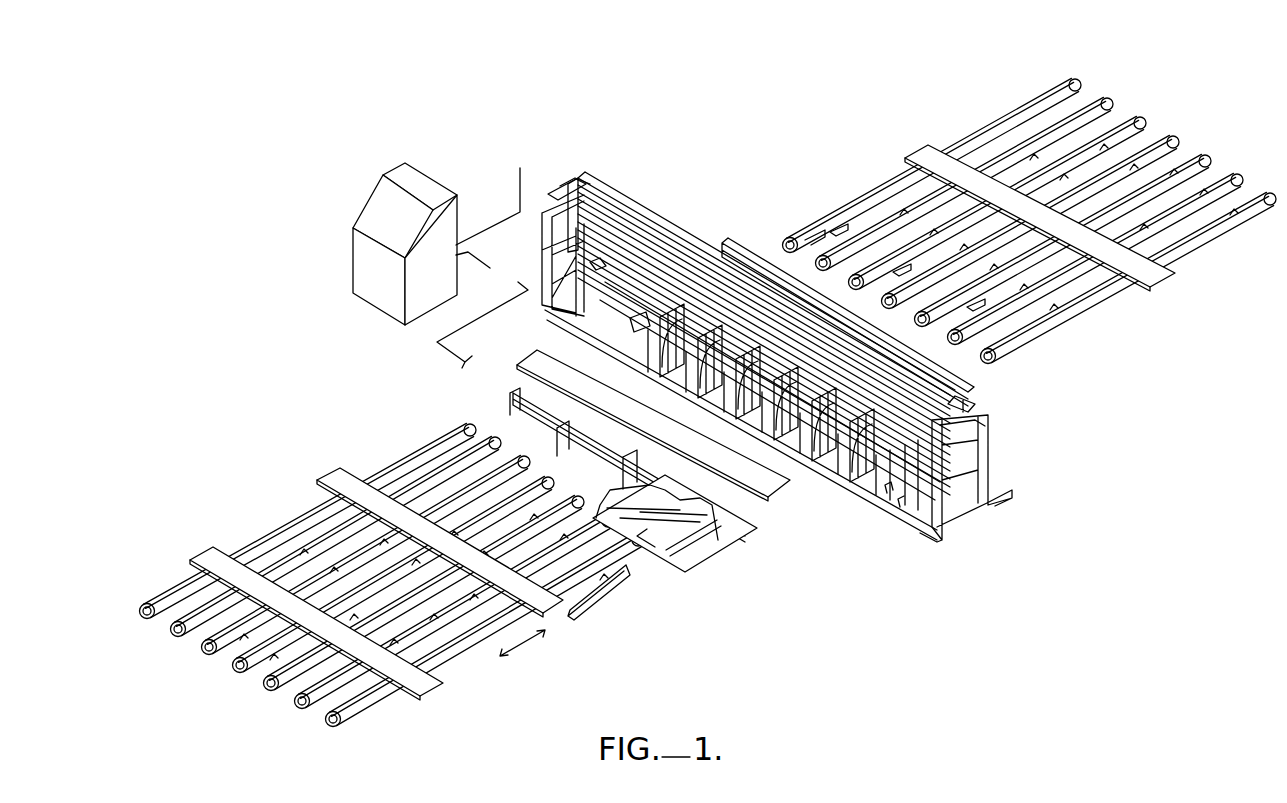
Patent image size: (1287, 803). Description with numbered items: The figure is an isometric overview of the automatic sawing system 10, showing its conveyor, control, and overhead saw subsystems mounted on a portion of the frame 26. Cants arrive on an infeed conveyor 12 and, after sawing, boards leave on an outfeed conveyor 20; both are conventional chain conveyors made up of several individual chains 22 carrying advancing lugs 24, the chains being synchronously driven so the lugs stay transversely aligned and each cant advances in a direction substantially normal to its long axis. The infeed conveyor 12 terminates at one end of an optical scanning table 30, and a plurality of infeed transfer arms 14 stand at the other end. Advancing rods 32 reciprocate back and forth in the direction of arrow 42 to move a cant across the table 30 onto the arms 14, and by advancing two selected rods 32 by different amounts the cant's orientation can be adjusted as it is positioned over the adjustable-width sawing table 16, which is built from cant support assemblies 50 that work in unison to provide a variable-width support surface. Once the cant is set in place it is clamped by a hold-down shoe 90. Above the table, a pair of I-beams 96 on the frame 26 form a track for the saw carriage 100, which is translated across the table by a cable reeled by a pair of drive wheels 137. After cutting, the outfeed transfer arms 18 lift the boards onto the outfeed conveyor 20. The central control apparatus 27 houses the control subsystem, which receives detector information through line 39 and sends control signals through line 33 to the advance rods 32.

The automatic sawing system 10 is at (806, 37).
The infeed conveyor 12 is at (223, 438).
The infeed transfer arms 14 is at (518, 390).
The adjustable-width sawing table 16 is at (878, 500).
The outfeed transfer arms 18 is at (968, 340).
The outfeed conveyor 20 is at (1066, 51).
The chains 22 is at (710, 402).
The advancing lugs 24 is at (418, 475).
The frame 26 is at (540, 273).
The central control apparatus 27 is at (373, 204).
The optical scanning table 30 is at (717, 543).
The advancing rods 32 is at (490, 427).
The line 33 is at (518, 190).
The line 39 is at (500, 306).
The arrow 42 is at (530, 633).
The cant support assemblies 50 is at (630, 335).
The hold-down shoe 90 is at (963, 427).
The I-beams 96 is at (548, 200).
The carriage 100 is at (590, 265).
The drive wheels 137 is at (588, 200).